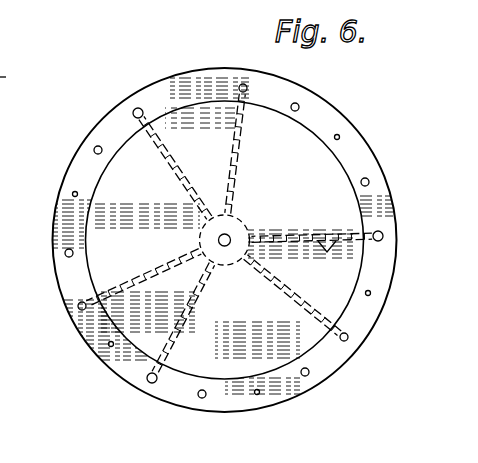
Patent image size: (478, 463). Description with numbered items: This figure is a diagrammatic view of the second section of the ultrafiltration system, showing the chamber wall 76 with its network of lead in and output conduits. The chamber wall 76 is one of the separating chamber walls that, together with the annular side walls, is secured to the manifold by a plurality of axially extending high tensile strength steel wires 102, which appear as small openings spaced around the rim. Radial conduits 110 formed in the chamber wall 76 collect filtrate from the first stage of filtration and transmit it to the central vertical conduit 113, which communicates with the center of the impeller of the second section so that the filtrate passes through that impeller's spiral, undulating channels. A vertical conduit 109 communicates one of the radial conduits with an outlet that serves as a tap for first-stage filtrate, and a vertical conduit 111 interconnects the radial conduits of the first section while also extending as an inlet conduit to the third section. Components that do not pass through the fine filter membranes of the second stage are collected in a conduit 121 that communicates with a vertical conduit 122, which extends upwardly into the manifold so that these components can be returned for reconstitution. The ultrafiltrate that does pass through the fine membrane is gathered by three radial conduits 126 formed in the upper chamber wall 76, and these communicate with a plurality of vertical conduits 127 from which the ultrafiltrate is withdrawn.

The chamber wall 76 is at (332, 374).
The wire rods 102 is at (193, 90).
The vertical conduit 109 is at (327, 252).
The radial conduits 110 is at (165, 158).
The vertical conduit 111 is at (137, 109).
The central vertical conduit 113 is at (229, 234).
The conduit 121 is at (21, 77).
The vertical conduit 122 is at (203, 436).
The radial conduits 126 is at (243, 165).
The vertical conduits 127 is at (246, 83).